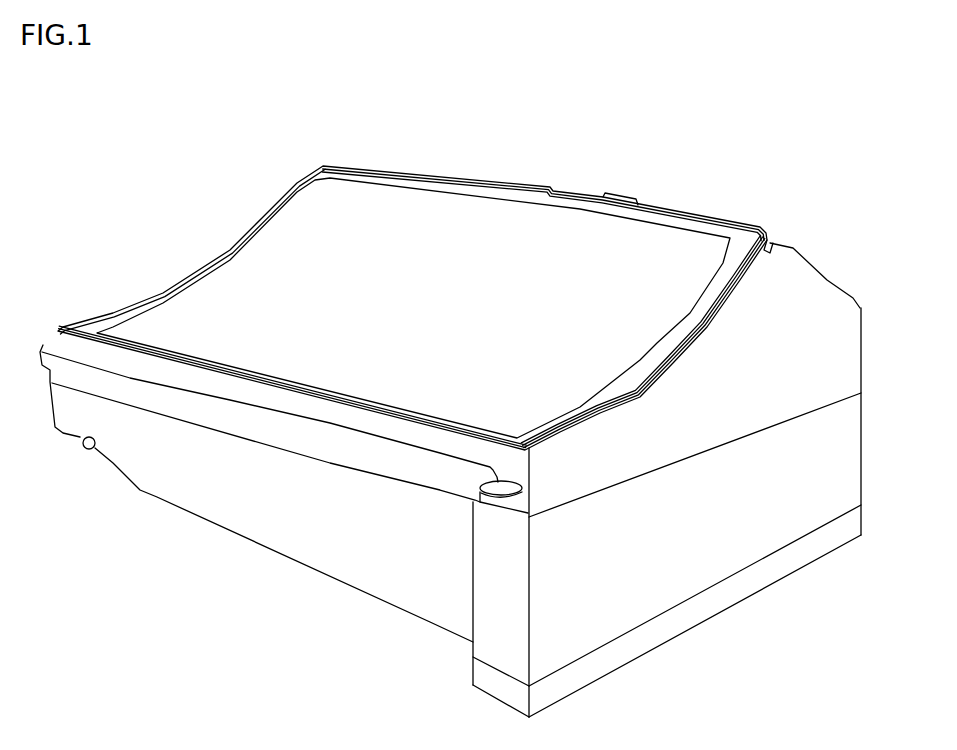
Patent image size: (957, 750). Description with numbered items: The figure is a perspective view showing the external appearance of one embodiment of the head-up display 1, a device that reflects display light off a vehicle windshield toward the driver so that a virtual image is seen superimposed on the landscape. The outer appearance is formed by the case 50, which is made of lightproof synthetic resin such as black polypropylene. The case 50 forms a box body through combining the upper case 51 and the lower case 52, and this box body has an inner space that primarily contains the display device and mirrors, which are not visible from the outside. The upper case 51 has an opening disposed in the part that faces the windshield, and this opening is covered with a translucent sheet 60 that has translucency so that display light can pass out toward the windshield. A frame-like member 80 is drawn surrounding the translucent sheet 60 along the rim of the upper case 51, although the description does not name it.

The head-up display 1 is at (742, 158).
The case 50 is at (245, 599).
The upper case 51 is at (207, 420).
The lower case 52 is at (265, 517).
The translucent sheet 60 is at (490, 215).
The frame 80 is at (425, 182).